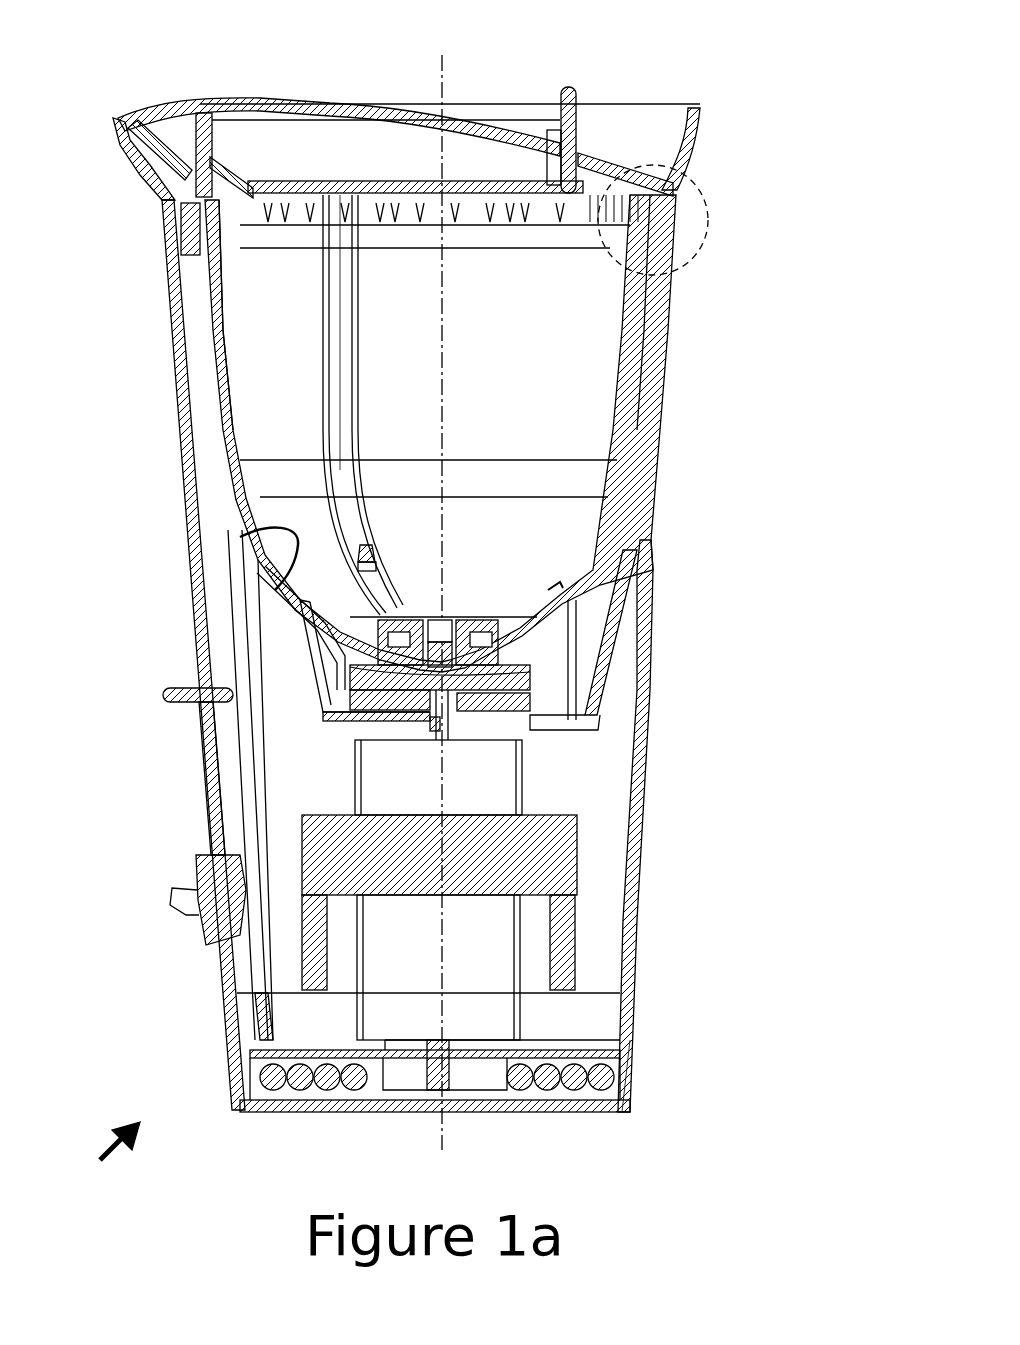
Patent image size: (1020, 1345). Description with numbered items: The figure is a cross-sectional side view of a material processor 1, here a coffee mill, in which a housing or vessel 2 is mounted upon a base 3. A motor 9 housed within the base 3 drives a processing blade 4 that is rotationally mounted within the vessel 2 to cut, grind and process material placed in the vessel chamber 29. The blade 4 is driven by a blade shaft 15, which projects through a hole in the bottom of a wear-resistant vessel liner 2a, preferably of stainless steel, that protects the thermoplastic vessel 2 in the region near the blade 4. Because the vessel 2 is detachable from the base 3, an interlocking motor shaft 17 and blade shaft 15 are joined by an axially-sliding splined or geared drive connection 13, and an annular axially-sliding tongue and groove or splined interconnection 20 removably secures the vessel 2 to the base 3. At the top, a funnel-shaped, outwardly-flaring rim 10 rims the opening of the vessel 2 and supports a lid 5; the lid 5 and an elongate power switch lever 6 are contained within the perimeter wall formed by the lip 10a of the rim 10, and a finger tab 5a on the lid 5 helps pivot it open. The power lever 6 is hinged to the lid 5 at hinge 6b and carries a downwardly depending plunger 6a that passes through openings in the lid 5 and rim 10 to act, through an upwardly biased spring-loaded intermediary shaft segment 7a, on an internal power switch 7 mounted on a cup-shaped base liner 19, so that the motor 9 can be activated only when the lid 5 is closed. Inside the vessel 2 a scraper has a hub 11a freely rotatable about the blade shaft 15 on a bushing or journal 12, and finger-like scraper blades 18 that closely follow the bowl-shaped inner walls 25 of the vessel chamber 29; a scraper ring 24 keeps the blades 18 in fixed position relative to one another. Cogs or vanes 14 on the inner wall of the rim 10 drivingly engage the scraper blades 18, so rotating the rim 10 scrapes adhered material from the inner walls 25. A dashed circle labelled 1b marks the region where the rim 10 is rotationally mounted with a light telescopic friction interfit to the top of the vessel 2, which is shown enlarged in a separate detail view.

The material processor 1 is at (101, 1164).
The detail area 1b is at (708, 228).
The vessel 2 is at (182, 460).
The wear-resistant vessel liner 2a is at (607, 575).
The base 3 is at (636, 890).
The processing blade 4 is at (372, 545).
The lid 5 is at (342, 183).
The finger tab 5a is at (576, 95).
The power switch lever 6 is at (248, 105).
The plunger 6a is at (196, 135).
The hinge 6b is at (553, 132).
The internal power switch 7 is at (190, 217).
The intermediary shaft segment 7a is at (192, 170).
The motor 9 is at (482, 940).
The funnel-shaped rim 10 is at (125, 128).
The lip 10a is at (700, 108).
The hub 11a is at (468, 625).
The bushing 12 is at (422, 622).
The drive connection 13 is at (492, 700).
The cogs or vanes 14 is at (427, 210).
The blade shaft 15 is at (440, 665).
The motor shaft 17 is at (432, 735).
The scraper blades 18 is at (230, 340).
The cup-shaped base liner 19 is at (596, 713).
The splined interconnection 20 is at (662, 487).
The scraper ring 24 is at (518, 240).
The inner walls 25 is at (260, 537).
The vessel chamber 29 is at (500, 305).